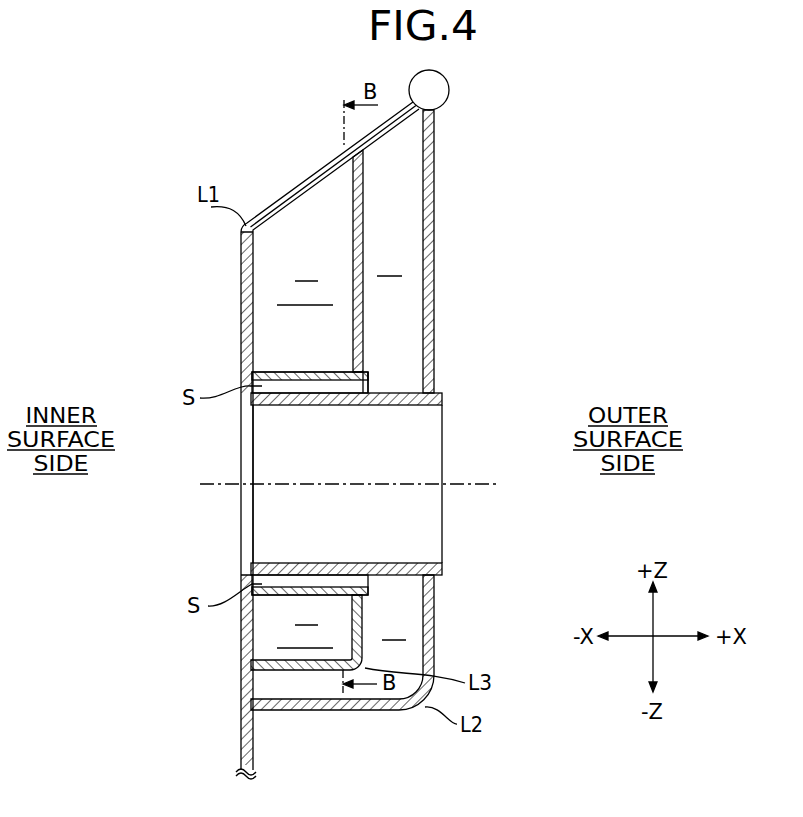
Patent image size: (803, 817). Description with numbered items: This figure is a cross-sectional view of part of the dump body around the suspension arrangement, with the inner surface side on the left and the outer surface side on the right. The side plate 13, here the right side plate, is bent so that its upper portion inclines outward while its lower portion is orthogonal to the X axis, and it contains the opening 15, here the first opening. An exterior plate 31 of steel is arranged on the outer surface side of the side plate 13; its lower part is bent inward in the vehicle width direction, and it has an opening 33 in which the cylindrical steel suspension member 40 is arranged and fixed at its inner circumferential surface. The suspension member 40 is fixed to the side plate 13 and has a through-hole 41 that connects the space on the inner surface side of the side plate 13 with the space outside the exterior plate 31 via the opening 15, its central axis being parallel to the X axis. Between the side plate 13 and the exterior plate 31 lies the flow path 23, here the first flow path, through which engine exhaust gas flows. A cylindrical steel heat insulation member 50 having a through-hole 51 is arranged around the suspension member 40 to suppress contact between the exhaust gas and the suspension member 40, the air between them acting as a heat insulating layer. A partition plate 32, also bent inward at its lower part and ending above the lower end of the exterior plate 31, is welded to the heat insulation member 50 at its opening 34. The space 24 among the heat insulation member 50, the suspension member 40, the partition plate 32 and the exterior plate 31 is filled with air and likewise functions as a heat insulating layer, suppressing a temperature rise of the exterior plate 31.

The side plate 13 is at (241, 263).
The opening 15 is at (252, 574).
The flow path 23 is at (305, 454).
The space 24 is at (391, 448).
The exterior plate 31 is at (434, 273).
The partition plate 32 is at (363, 226).
The opening 33 is at (434, 402).
The opening 34 is at (368, 385).
The suspension member 40 is at (398, 405).
The through-hole 41 is at (437, 457).
The heat insulation member 50 is at (333, 372).
The through-hole 51 is at (370, 383).